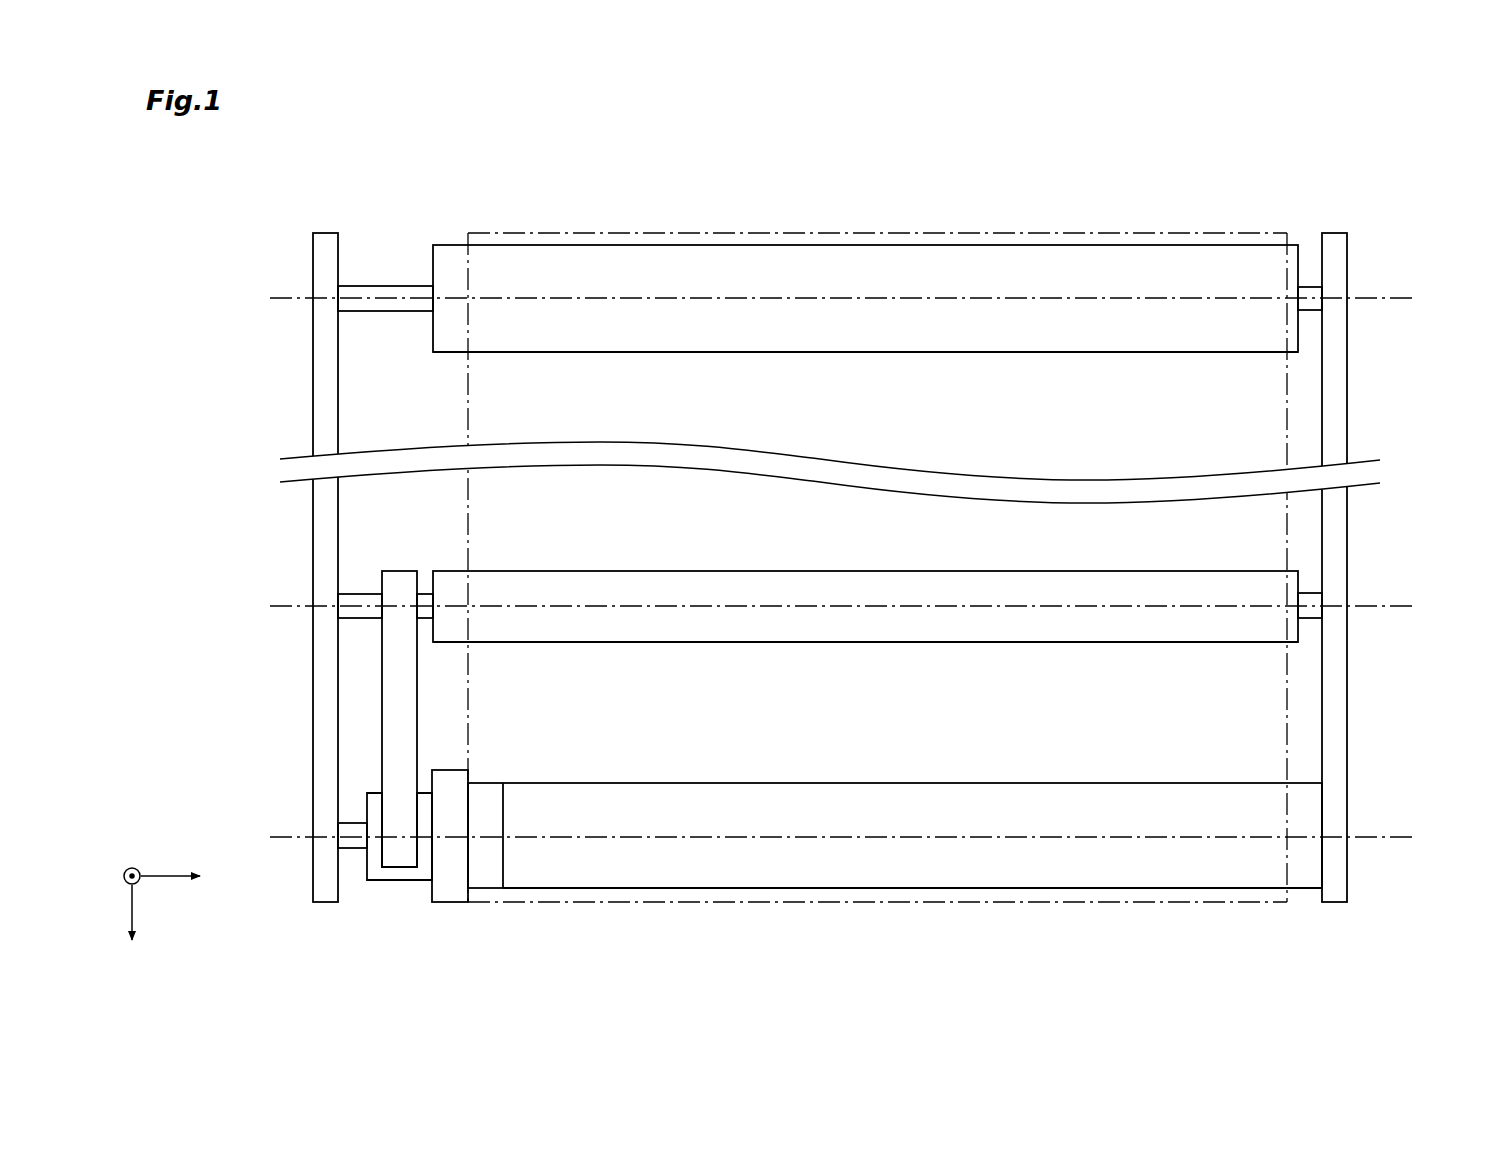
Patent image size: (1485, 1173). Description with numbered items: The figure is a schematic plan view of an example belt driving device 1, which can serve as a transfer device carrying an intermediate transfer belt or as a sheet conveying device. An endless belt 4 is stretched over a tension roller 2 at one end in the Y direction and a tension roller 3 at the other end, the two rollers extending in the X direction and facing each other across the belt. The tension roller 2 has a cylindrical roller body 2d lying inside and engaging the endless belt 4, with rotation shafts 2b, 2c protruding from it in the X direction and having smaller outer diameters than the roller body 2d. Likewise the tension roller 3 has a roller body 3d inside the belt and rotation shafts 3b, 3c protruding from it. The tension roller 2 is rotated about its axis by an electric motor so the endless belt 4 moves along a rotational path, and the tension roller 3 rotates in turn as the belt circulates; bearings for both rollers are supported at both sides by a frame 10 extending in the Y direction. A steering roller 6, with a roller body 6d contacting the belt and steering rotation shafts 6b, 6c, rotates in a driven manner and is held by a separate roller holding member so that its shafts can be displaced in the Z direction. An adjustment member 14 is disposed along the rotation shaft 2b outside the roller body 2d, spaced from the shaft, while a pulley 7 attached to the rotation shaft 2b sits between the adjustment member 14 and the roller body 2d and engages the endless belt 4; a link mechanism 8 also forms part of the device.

The belt driving device 1 is at (784, 528).
The tension roller 2 is at (1300, 770).
The rotation shaft 2b is at (355, 850).
The rotation shaft 2c is at (1312, 822).
The roller body 2d is at (740, 890).
The tension roller 3 is at (1303, 232).
The rotation shaft 3b is at (370, 287).
The rotation shaft 3c is at (1312, 283).
The roller body 3d is at (1240, 352).
The endless belt 4 is at (822, 233).
The steering roller 6 is at (1300, 555).
The rotation shaft 6b is at (363, 593).
The rotation shaft 6c is at (1313, 593).
The roller body 6d is at (1240, 642).
The pulley 7 is at (485, 875).
The link mechanism 8 is at (385, 708).
The frame 10 is at (320, 880).
The adjustment member 14 is at (397, 878).